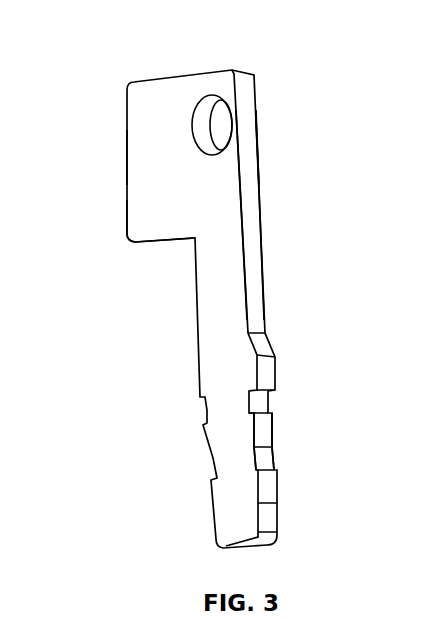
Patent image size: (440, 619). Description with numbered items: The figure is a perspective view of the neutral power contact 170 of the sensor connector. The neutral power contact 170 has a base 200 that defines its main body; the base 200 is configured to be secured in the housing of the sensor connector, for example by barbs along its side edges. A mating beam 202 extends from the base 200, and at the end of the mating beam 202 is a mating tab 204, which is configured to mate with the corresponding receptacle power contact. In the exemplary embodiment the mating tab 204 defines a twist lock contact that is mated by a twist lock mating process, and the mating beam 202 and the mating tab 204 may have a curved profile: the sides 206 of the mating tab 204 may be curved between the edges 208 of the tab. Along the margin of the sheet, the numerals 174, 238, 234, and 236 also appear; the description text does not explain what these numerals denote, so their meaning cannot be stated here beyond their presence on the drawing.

The neutral power contact 170 is at (300, 72).
The mating tab 204 is at (172, 105).
The edges 208 is at (127, 160).
The sides 206 is at (140, 207).
The mating beam 202 is at (230, 250).
The base 200 is at (228, 467).
The component 174 is at (439, 369).
The component 238 is at (439, 462).
The component 234 is at (439, 502).
The component 236 is at (439, 546).